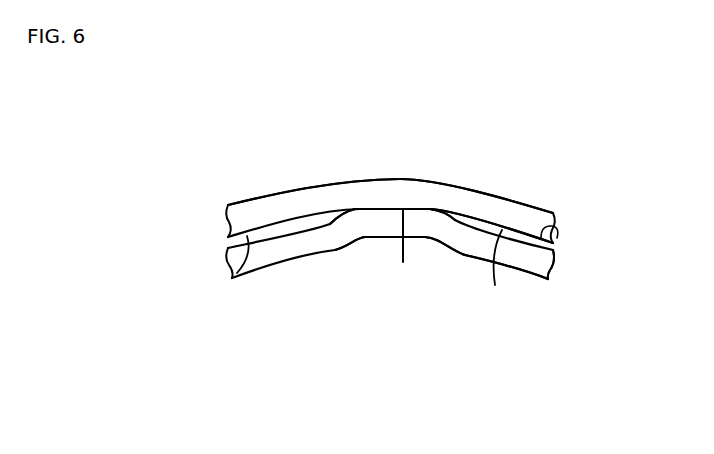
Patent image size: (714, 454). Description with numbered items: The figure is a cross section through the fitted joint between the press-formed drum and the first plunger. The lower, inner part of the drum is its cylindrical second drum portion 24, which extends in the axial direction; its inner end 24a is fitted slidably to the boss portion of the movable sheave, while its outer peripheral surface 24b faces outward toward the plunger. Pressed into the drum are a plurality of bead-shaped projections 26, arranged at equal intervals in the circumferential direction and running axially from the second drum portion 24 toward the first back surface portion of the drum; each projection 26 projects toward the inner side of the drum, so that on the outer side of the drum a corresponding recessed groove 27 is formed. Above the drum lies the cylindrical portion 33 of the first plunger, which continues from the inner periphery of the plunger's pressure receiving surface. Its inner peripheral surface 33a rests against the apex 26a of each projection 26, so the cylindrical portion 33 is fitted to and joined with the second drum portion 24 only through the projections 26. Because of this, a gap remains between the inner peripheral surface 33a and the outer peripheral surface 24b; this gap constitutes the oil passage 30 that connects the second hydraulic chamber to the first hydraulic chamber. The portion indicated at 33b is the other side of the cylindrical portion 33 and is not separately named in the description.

The cylindrical portion 33 is at (546, 211).
The inner peripheral surface 33a is at (431, 211).
The upper surface of cover member 33b is at (510, 192).
The second drum portion 24 is at (267, 265).
The inner end 24a is at (523, 258).
The outer peripheral surface 24b is at (537, 250).
The bead-shaped projection 26 is at (392, 227).
The apex 26a is at (403, 262).
The recessed groove 27 is at (373, 247).
The oil passage 30 is at (237, 273).